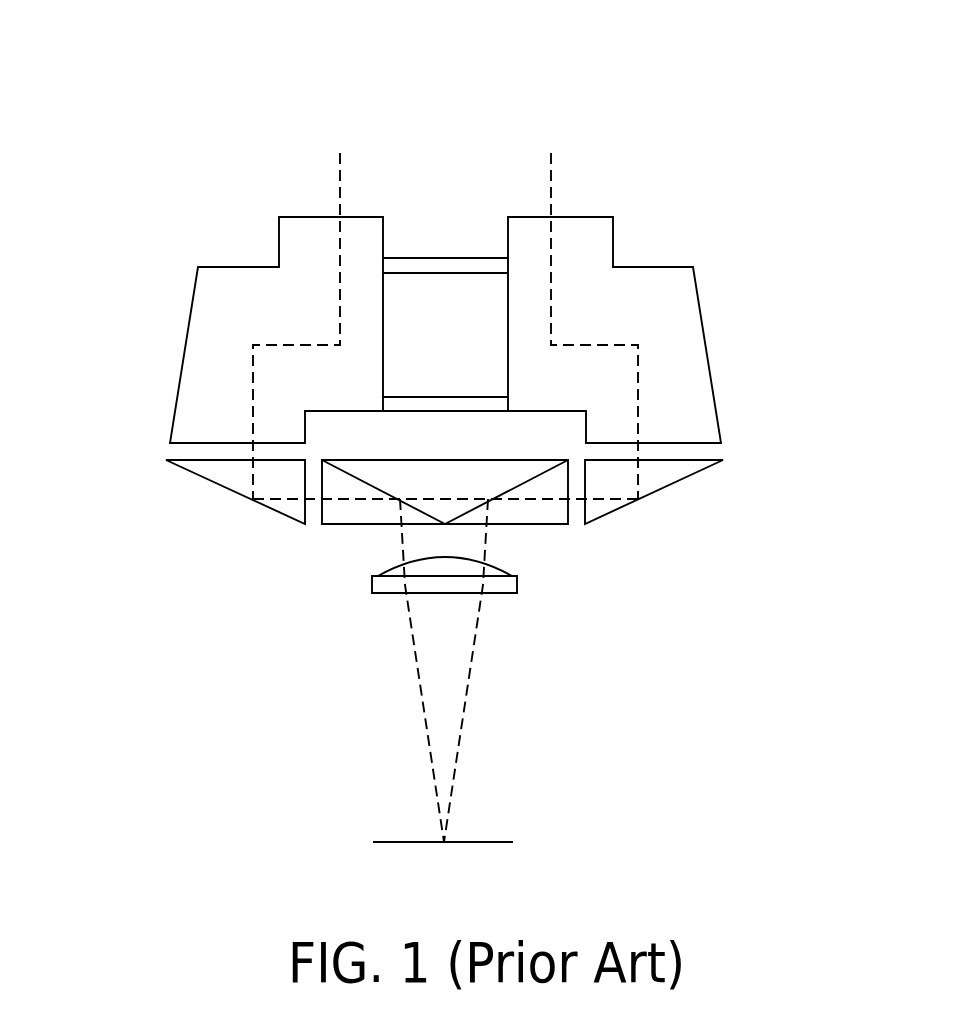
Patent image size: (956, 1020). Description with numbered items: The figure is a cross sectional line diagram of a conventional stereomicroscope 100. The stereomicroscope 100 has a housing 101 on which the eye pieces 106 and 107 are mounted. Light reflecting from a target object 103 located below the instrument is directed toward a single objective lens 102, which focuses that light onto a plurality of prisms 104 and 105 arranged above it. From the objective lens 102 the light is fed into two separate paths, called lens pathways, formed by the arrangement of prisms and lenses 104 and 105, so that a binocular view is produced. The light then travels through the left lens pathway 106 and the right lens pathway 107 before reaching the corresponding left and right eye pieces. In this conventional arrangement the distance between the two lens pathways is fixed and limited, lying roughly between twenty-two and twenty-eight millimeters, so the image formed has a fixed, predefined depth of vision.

The stereomicroscope 100 is at (596, 78).
The housing 101 is at (182, 365).
The single objective lens 102 is at (518, 583).
The target object 103 is at (497, 842).
The prism 104 is at (336, 513).
The prism 105 is at (660, 492).
The eye piece / left lens pathway 106 is at (588, 217).
The eye piece / right lens pathway 107 is at (306, 217).